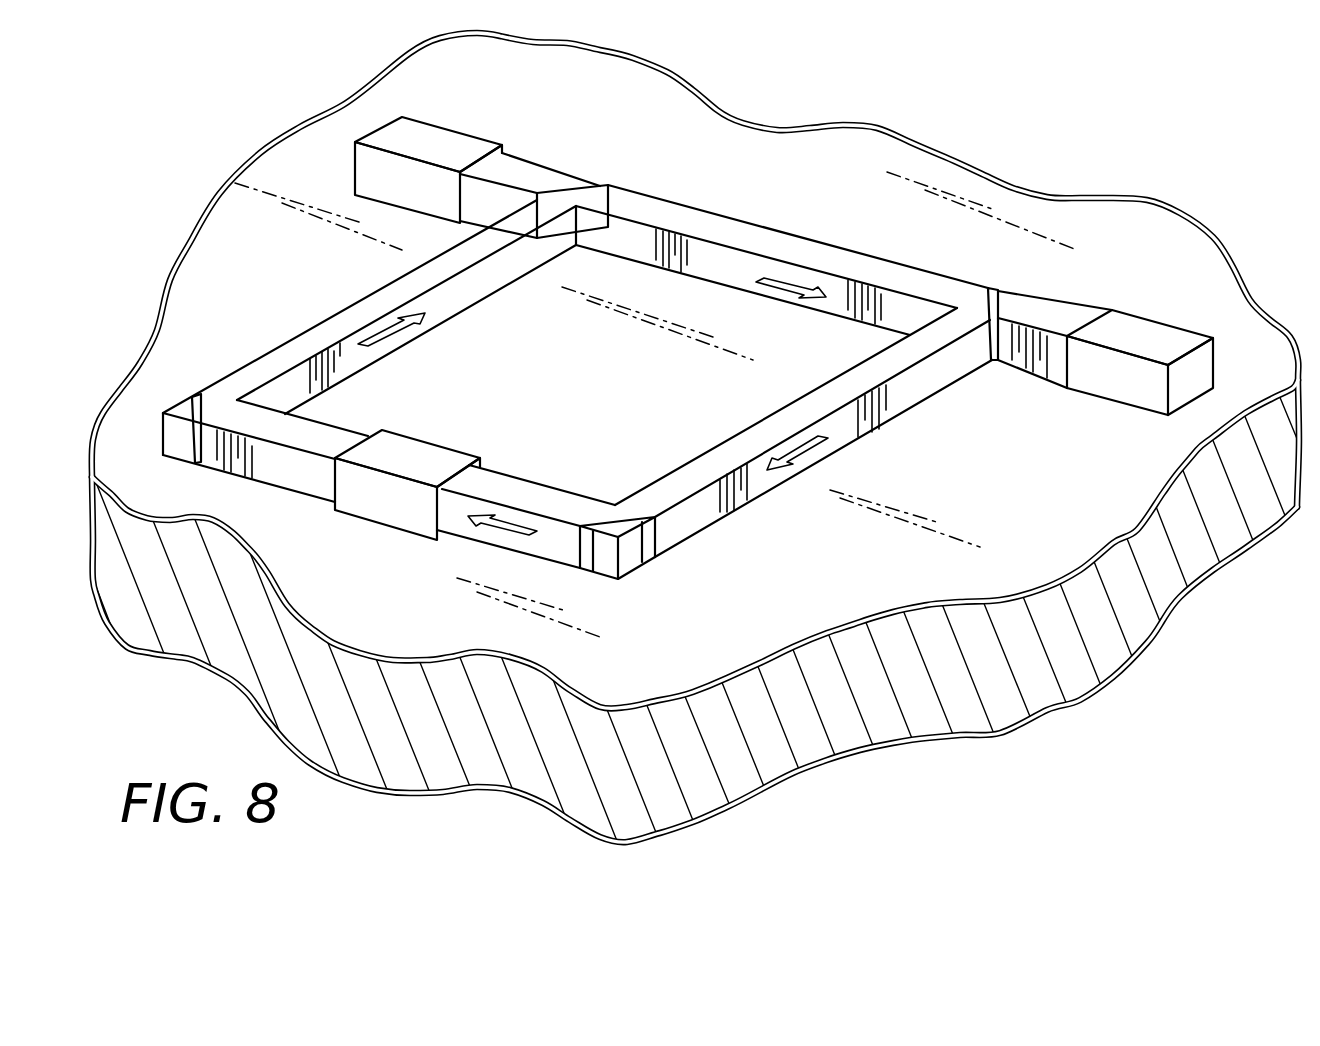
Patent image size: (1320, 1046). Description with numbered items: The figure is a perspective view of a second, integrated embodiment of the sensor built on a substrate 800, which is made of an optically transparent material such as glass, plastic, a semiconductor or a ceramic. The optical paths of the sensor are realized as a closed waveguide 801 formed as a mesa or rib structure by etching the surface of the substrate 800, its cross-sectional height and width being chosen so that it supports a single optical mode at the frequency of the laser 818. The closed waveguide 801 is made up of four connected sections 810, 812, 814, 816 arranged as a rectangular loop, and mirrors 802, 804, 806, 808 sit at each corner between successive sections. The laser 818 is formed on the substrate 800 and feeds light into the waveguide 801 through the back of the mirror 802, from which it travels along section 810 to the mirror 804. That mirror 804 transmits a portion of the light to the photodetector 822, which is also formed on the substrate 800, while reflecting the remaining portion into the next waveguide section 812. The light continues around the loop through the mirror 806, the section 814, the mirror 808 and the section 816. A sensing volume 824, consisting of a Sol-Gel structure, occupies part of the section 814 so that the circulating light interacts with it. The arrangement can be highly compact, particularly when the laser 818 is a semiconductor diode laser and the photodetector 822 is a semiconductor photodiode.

The substrate 800 is at (886, 718).
The closed waveguide 801 is at (320, 281).
The mirror 802 is at (603, 197).
The mirror 804 is at (983, 303).
The mirror 806 is at (600, 522).
The mirror 808 is at (208, 400).
The waveguide section 810 is at (737, 230).
The waveguide section 812 is at (923, 387).
The waveguide section 814 is at (283, 463).
The waveguide section 816 is at (483, 280).
The laser 818 is at (434, 140).
The photodetector 822 is at (1145, 333).
The sensing volume 824 is at (387, 503).